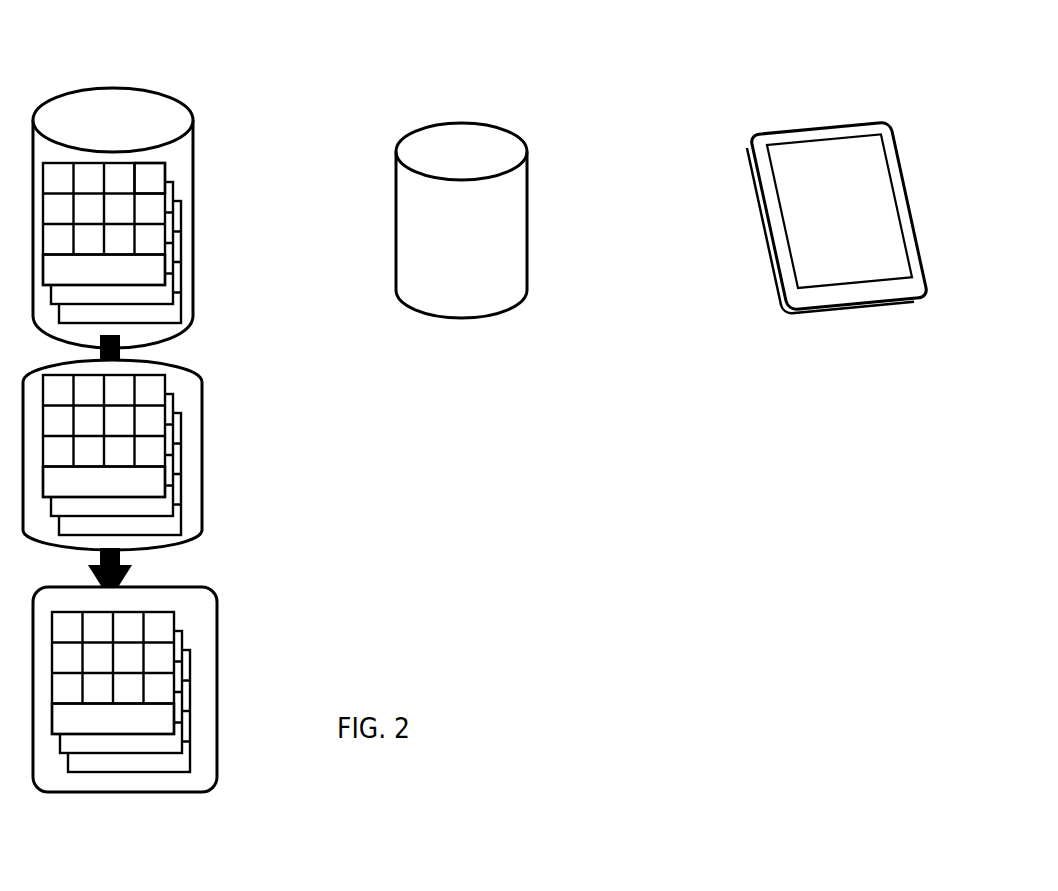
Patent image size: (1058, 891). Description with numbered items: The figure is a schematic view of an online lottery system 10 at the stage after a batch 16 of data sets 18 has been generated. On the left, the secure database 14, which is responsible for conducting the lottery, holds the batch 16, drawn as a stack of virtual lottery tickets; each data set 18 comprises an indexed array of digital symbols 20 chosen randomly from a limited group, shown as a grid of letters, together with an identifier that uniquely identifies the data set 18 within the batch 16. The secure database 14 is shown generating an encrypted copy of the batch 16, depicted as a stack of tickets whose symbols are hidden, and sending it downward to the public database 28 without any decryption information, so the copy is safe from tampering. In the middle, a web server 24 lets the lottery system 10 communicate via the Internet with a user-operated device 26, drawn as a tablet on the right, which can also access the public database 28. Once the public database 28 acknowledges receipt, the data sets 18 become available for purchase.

The lottery system 10 is at (804, 160).
The secure database 14 is at (161, 209).
The batch 16 is at (166, 213).
The data set 18 is at (166, 214).
The indexed array of digital symbols 20 is at (157, 187).
The web server 24 is at (528, 180).
The user-operated device 26 is at (777, 285).
The public database 28 is at (161, 665).